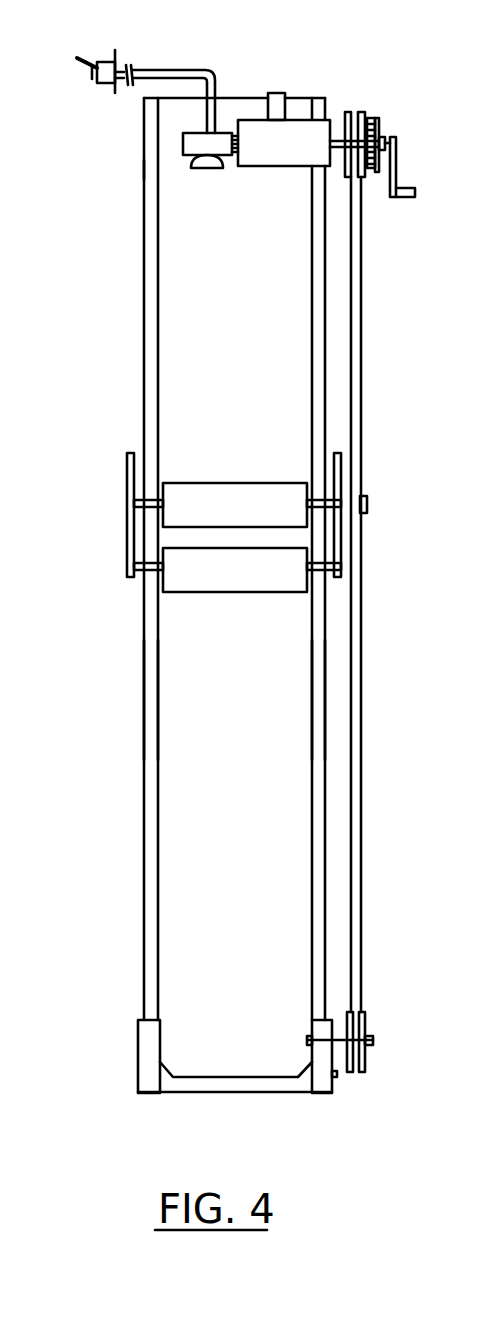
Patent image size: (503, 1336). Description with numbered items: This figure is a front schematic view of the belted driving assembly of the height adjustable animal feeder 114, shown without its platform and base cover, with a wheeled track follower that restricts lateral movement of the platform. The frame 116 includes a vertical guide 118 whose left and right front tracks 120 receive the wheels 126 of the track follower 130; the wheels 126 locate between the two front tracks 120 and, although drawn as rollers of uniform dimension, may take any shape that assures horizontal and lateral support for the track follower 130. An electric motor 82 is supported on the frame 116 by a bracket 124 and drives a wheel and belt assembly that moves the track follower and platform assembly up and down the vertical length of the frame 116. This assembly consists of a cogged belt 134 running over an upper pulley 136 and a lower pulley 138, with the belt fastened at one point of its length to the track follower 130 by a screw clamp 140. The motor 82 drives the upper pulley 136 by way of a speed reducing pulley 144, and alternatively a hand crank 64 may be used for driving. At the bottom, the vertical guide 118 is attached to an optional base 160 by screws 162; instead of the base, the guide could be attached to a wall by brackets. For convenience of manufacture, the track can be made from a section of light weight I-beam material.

The hand crank 64 is at (416, 191).
The electric motor 82 is at (255, 123).
The height adjustable animal feeder 114 is at (134, 174).
The frame 116 is at (145, 108).
The vertical guide 118 is at (205, 773).
The front track 120 is at (145, 672).
The bracket 124 is at (276, 95).
The wheels 126 is at (222, 490).
The track follower 130 is at (127, 487).
The cogged belt 134 is at (361, 820).
The upper pulley 136 is at (365, 112).
The lower pulley 138 is at (366, 1060).
The screw clamp 140 is at (367, 500).
The speed reducing pulley 144 is at (381, 125).
The base 160 is at (293, 1088).
The screws 162 is at (137, 1073).